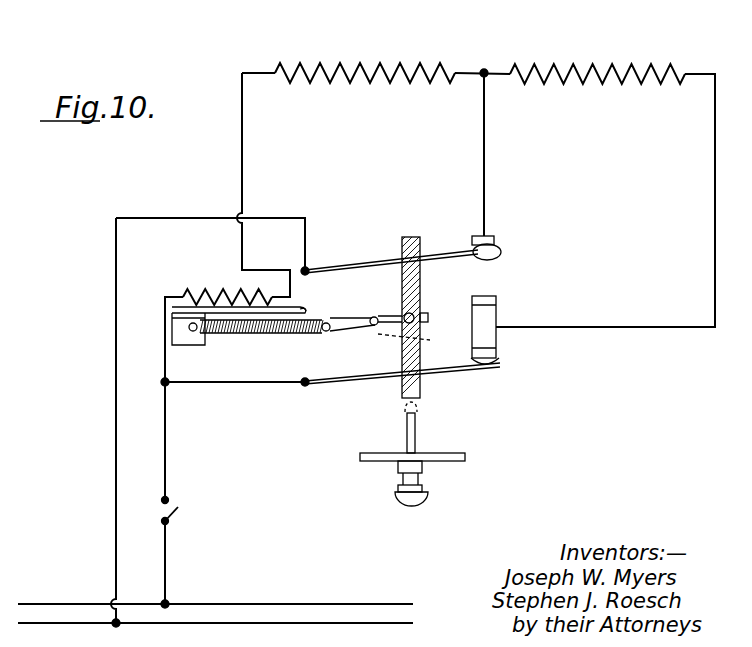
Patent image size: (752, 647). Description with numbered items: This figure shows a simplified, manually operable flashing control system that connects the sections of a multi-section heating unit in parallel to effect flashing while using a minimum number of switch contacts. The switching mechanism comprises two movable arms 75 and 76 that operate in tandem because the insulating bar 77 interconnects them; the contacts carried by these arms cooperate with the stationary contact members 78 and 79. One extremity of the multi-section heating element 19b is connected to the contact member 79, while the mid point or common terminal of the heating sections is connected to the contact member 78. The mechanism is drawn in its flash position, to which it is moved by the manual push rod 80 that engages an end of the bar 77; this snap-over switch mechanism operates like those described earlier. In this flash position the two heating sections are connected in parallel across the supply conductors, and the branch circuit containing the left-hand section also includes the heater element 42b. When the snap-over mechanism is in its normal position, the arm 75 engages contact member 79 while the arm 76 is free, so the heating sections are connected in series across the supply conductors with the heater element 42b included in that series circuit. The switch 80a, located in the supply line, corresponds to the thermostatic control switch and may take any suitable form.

The multi-section heating element 19b is at (512, 45).
The heater element 42b is at (214, 290).
The movable arm 75 is at (360, 267).
The movable arm 76 is at (360, 386).
The insulating bar 77 is at (421, 298).
The stationary contact member 78 is at (494, 240).
The stationary contact member 79 is at (488, 318).
The manual push rod 80 is at (413, 440).
The switch 80a is at (172, 519).